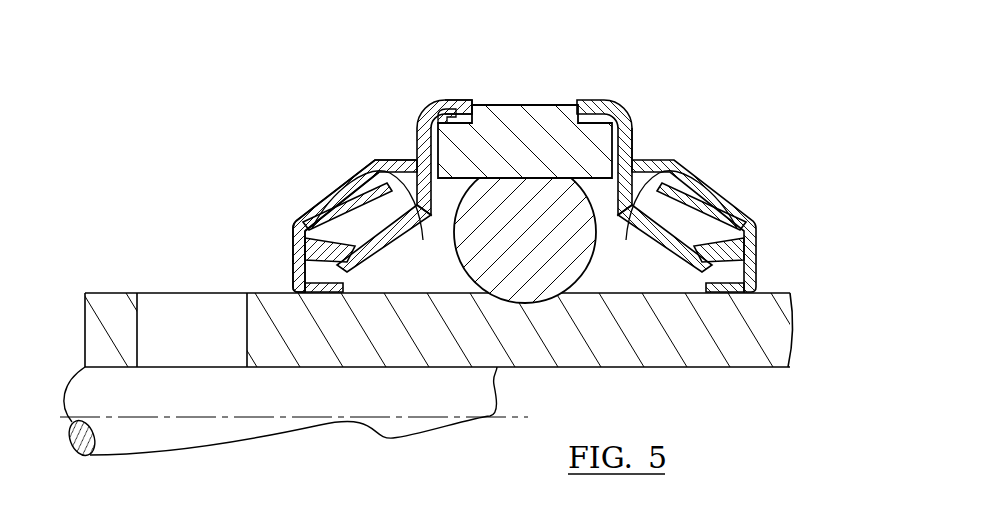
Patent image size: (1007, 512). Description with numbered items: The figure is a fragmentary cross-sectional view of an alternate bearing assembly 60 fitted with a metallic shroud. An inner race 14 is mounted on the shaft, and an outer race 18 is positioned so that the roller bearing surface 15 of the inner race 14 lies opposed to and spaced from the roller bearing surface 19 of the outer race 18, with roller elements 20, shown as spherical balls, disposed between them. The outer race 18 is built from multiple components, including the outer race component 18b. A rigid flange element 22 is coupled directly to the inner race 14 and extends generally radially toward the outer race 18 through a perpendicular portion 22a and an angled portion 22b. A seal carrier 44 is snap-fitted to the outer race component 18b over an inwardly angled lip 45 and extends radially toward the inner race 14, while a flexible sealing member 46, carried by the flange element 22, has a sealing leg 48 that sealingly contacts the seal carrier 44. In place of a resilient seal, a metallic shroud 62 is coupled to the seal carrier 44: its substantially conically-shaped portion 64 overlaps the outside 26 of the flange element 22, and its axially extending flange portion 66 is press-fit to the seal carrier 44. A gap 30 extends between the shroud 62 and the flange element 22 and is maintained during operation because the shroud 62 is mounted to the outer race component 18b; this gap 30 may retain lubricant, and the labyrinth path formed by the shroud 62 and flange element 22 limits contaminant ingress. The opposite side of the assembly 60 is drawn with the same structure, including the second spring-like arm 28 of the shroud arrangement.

The inner race 14 is at (453, 347).
The roller bearing surface 15 is at (523, 303).
The outer race 18 is at (521, 105).
The outer race component 18b is at (515, 130).
The roller bearing surface 19 is at (542, 160).
The roller elements 20 is at (560, 255).
The flange element 22 is at (308, 306).
The perpendicular portion 22a is at (293, 267).
The angled portion 22b is at (295, 233).
The outside of flange element 26 is at (318, 206).
The second spring arm 28 is at (715, 228).
The gap 30 is at (524, 180).
The seal carrier 44 is at (364, 262).
The inwardly angled lip 45 is at (445, 128).
The flexible sealing member 46 is at (312, 283).
The sealing leg 48 is at (277, 250).
The bearing assembly 60 is at (670, 70).
The metallic shroud 62 is at (346, 175).
The conically-shaped portion 64 is at (322, 205).
The axially extending flange portion 66 is at (450, 100).